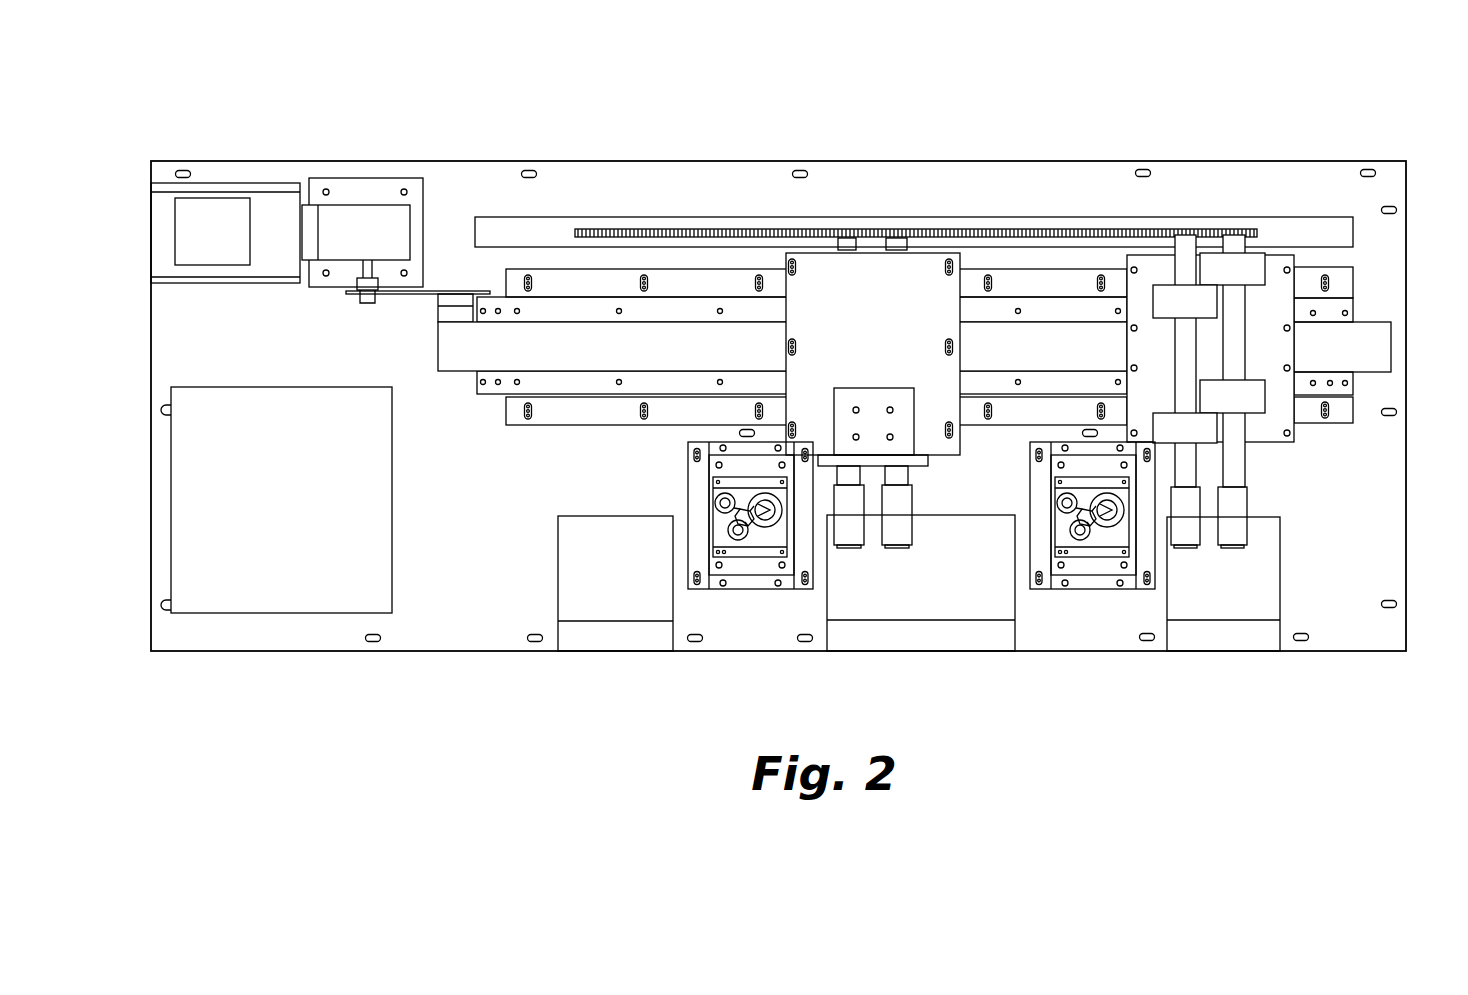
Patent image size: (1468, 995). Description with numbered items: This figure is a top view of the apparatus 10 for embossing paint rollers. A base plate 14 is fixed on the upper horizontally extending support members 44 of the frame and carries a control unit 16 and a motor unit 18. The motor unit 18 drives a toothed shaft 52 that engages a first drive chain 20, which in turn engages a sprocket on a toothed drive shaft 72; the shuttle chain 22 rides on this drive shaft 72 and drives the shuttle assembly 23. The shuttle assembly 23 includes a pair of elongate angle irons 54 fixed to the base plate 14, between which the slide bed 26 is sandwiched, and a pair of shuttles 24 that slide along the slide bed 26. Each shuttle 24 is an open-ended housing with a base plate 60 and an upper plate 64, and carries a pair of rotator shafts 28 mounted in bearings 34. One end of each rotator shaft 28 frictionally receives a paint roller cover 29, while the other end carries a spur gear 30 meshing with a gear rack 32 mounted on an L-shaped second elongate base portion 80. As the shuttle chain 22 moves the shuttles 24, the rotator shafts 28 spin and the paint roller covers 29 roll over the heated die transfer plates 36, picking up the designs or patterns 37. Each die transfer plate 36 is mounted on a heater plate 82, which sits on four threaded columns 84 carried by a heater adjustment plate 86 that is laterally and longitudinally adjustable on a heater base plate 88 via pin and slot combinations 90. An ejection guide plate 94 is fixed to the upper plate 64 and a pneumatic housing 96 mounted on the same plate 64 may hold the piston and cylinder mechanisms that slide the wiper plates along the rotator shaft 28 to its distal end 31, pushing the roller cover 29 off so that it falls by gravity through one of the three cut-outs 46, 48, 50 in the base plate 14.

The apparatus for embossing paint rollers 10 is at (1276, 79).
The base plate 14 is at (187, 638).
The control unit 16 is at (254, 517).
The motor unit 18 is at (198, 242).
The first drive chain 20 is at (430, 290).
The shuttle chain 22 is at (512, 360).
The shuttle assembly 23 is at (911, 200).
The shuttle 24 is at (932, 258).
The slide bed 26 is at (492, 396).
The rotator shaft 28 is at (899, 548).
The paint roller cover 29 is at (912, 533).
The spur gear 30 is at (1185, 233).
The distal end of rotatable shaft 31 is at (1232, 548).
The gear rack 32 is at (625, 231).
The bearing 34 is at (1256, 407).
The die transfer plate 36 is at (1095, 547).
The design or pattern 37 is at (735, 525).
The upper horizontally extending support member 44 is at (652, 652).
The cut-out 46 is at (603, 607).
The cut-out 48 is at (932, 608).
The cut-out 50 is at (1240, 608).
The toothed shaft 52 is at (367, 265).
The elongate angle iron 54 is at (556, 269).
The shuttle base plate 60 is at (1254, 444).
The upper plate 64 is at (859, 312).
The toothed drive shaft 72 is at (443, 310).
The rack gear second elongate base portion 80 is at (1284, 216).
The heater plate 82 is at (765, 580).
The threaded column 84 is at (1118, 586).
The heater adjustment plate 86 is at (1066, 587).
The heater base plate 88 is at (1155, 560).
The pin and slot combination 90 is at (720, 567).
The ejection guide plate 94 is at (922, 468).
The pneumatic housing 96 is at (870, 388).